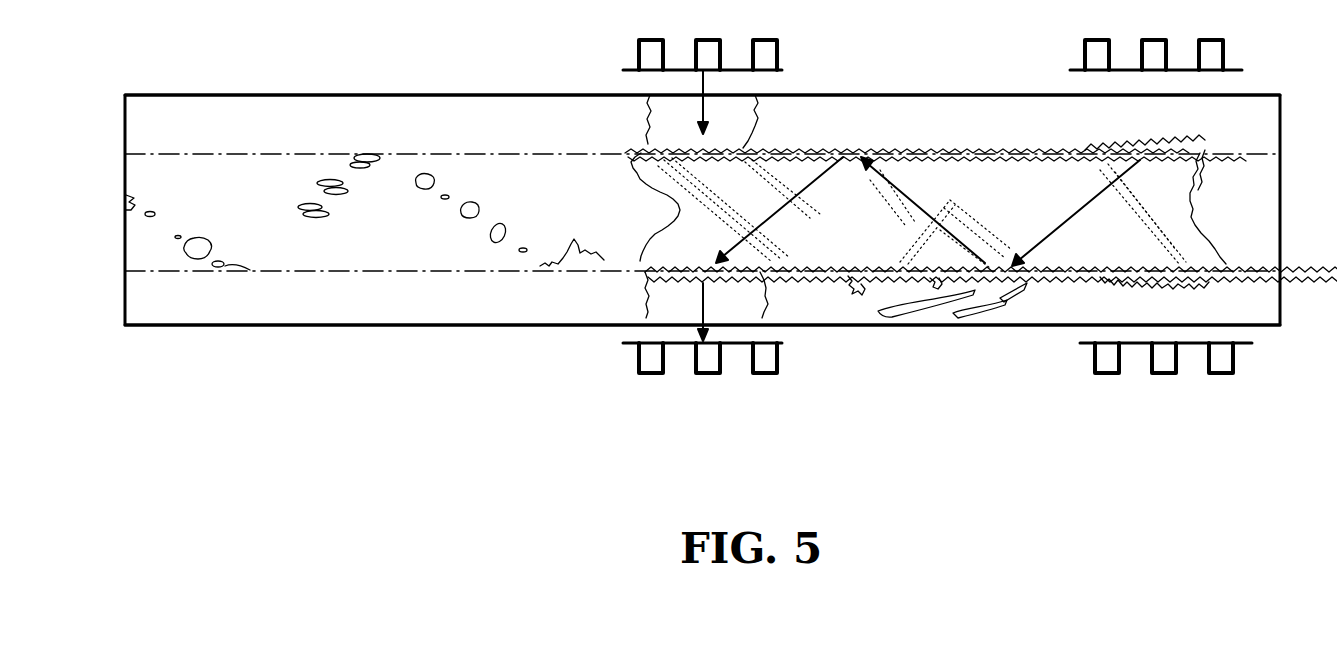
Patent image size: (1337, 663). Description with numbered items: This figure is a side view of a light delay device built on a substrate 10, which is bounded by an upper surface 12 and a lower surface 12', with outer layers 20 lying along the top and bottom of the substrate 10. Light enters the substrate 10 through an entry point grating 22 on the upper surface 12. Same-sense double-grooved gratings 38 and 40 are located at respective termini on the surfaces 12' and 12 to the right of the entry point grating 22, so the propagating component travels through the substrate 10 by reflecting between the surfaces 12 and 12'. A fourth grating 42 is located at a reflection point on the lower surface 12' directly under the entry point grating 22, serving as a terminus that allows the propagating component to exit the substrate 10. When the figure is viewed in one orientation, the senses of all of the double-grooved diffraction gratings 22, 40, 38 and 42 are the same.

The substrate 10 is at (1283, 196).
The surface 12 is at (326, 166).
The surface 12' is at (560, 276).
The outer surface layer 20 is at (1283, 127).
The entry point grating 22 is at (745, 140).
The double-grooved grating 38 is at (1063, 313).
The double-grooved grating 40 is at (1113, 143).
The fourth grating 42 is at (650, 273).